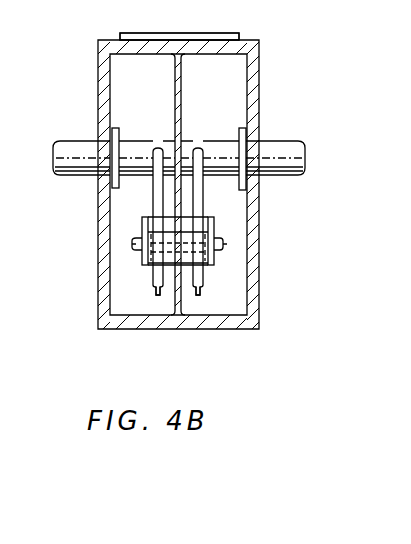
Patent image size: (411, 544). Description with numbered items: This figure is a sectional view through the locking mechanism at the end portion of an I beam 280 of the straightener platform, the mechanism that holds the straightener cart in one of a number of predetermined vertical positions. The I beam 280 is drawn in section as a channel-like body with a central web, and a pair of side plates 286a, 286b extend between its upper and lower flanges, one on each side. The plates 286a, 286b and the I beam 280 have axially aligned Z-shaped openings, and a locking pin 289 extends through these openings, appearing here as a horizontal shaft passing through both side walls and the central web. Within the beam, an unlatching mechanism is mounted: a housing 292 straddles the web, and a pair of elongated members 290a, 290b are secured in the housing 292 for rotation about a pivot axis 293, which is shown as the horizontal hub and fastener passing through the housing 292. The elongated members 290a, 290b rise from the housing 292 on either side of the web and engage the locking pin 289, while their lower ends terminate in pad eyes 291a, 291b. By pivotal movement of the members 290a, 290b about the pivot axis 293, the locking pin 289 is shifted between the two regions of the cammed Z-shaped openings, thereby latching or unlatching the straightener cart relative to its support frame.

The I beam 280 is at (190, 338).
The side plate 286a is at (261, 53).
The side plate 286b is at (98, 53).
The locking pin 289 is at (71, 141).
The elongated member 290a is at (205, 285).
The elongated member 290b is at (152, 284).
The pad eye 291a is at (203, 295).
The pad eye 291b is at (153, 294).
The housing 292 is at (210, 220).
The pivot axis 293 is at (132, 244).